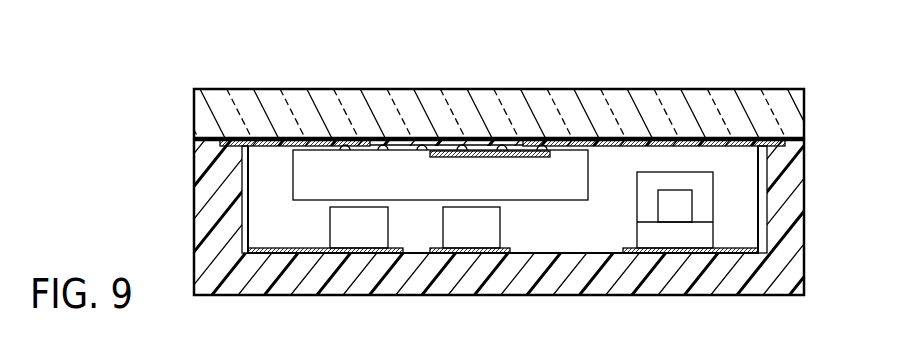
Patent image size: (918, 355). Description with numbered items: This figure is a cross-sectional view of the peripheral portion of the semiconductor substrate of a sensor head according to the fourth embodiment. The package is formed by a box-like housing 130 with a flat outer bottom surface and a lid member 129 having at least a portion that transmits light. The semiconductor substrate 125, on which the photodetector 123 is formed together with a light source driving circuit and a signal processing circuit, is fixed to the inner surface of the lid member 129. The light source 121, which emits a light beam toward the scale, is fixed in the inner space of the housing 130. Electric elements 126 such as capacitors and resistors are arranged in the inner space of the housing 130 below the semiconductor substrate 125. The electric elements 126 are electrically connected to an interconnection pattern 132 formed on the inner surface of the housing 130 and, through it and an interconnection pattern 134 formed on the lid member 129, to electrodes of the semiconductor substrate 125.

The lid member 129 is at (758, 120).
The box-like housing 130 is at (227, 233).
The interconnection pattern 134 is at (238, 139).
The semiconductor substrate 125 is at (399, 168).
The photodetector 123 is at (518, 150).
The electric elements 126 is at (388, 228).
The light source 121 is at (642, 236).
The interconnection pattern 132 is at (272, 254).